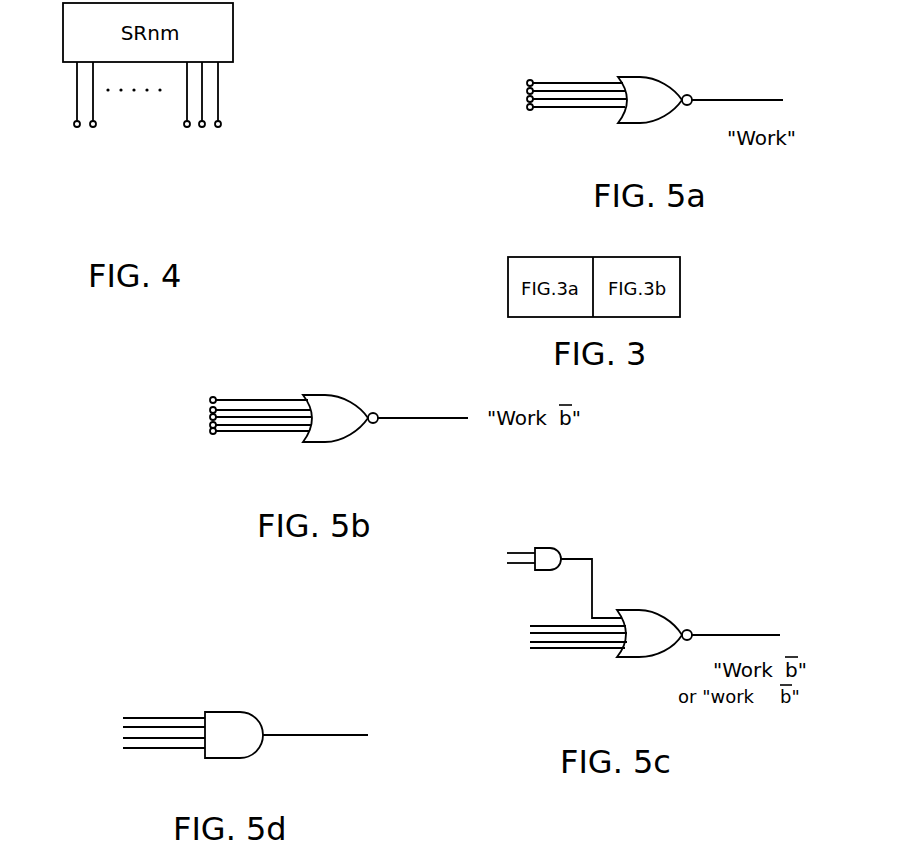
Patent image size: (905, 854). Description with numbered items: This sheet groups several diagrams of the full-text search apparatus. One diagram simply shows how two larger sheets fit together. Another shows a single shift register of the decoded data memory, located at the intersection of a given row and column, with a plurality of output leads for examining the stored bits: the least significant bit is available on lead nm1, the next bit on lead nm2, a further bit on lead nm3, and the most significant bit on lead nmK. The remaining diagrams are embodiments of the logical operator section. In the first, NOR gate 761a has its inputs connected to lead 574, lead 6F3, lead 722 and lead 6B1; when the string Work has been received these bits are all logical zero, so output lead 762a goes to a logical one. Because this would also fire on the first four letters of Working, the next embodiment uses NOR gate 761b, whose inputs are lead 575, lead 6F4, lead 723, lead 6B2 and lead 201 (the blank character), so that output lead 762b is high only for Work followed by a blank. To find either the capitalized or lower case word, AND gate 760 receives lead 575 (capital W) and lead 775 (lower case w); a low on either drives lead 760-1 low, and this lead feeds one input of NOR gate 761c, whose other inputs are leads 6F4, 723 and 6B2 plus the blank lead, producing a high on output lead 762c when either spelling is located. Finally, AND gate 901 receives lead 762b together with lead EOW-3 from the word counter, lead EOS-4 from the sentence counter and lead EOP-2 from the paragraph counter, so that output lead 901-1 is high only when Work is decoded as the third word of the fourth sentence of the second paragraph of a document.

In FIG. 5A, the lead 574 is at (527, 81).
In FIG. 5A, the lead 6F3 is at (527, 91).
In FIG. 5A, the lead 722 is at (527, 99).
In FIG. 5A, the lead 6B1 is at (528, 110).
In FIG. 5A, the NOR gate 761a is at (672, 50).
In FIG. 5A, the output lead 762a is at (772, 82).
In FIG. 5B, the lead 575 is at (212, 397).
In FIG. 5C, the lead 575 is at (507, 553).
In FIG. 5B, the lead 6F4 is at (210, 409).
In FIG. 5C, the lead 6F4 is at (532, 626).
In FIG. 5B, the lead 723 is at (210, 417).
In FIG. 5C, the lead 723 is at (530, 633).
In FIG. 5B, the lead 6B2 is at (210, 426).
In FIG. 5C, the lead 6B2 is at (530, 642).
In FIG. 5B, the lead 201 is at (212, 434).
In FIG. 5C, the lead 201 is at (530, 649).
In FIG. 5B, the NOR gate 761b is at (362, 375).
In FIG. 5B, the output lead 762b is at (462, 407).
In FIG. 5D, the output lead 762b is at (125, 716).
In FIG. 5C, the AND gate 760 is at (552, 548).
In FIG. 5C, the lead 775 is at (507, 563).
In FIG. 5C, the lead 760-1 is at (592, 585).
In FIG. 5C, the NOR gate 761c is at (670, 595).
In FIG. 5C, the output lead 762c is at (762, 622).
In FIG. 5D, the AND gate 901 is at (253, 712).
In FIG. 5D, the output lead 901-1 is at (345, 735).
In FIG. 5D, the lead EOW-3 is at (123, 727).
In FIG. 5D, the lead EOS-4 is at (123, 738).
In FIG. 5D, the lead EOP-2 is at (123, 748).
In FIG. 4, the lead nmK is at (77, 128).
In FIG. 4, the shift register output terminal nm3 is at (187, 128).
In FIG. 4, the lead nm2 is at (202, 128).
In FIG. 4, the lead nm1 is at (218, 128).